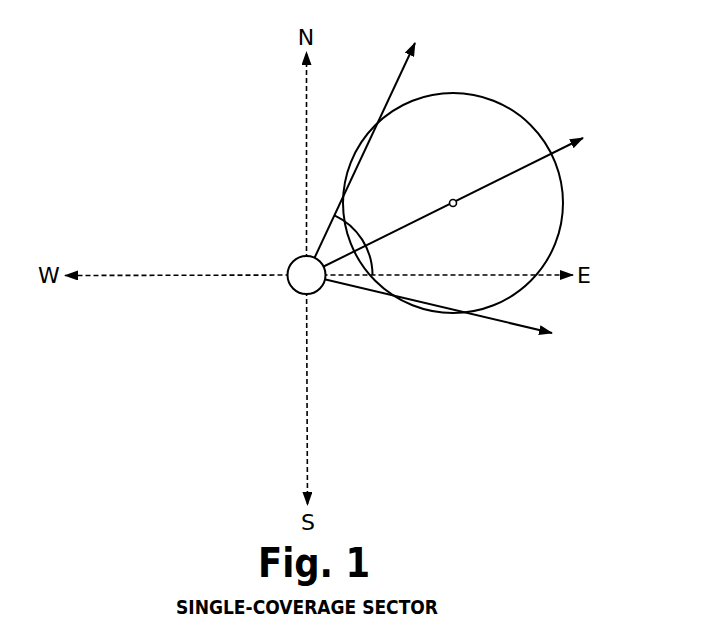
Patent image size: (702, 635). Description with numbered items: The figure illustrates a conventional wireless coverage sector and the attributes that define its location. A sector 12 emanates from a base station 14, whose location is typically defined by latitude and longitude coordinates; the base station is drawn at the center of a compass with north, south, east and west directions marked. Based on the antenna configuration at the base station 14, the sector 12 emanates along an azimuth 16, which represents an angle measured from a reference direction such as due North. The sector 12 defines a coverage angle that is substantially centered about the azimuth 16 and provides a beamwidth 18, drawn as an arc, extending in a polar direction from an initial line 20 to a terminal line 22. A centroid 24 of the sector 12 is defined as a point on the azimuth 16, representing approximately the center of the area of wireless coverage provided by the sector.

The sector 12 is at (490, 97).
The base station 14 is at (293, 289).
The azimuth 16 is at (490, 187).
The beamwidth 18 is at (358, 232).
The initial line 20 is at (520, 327).
The terminal line 22 is at (402, 68).
The centroid 24 is at (453, 199).